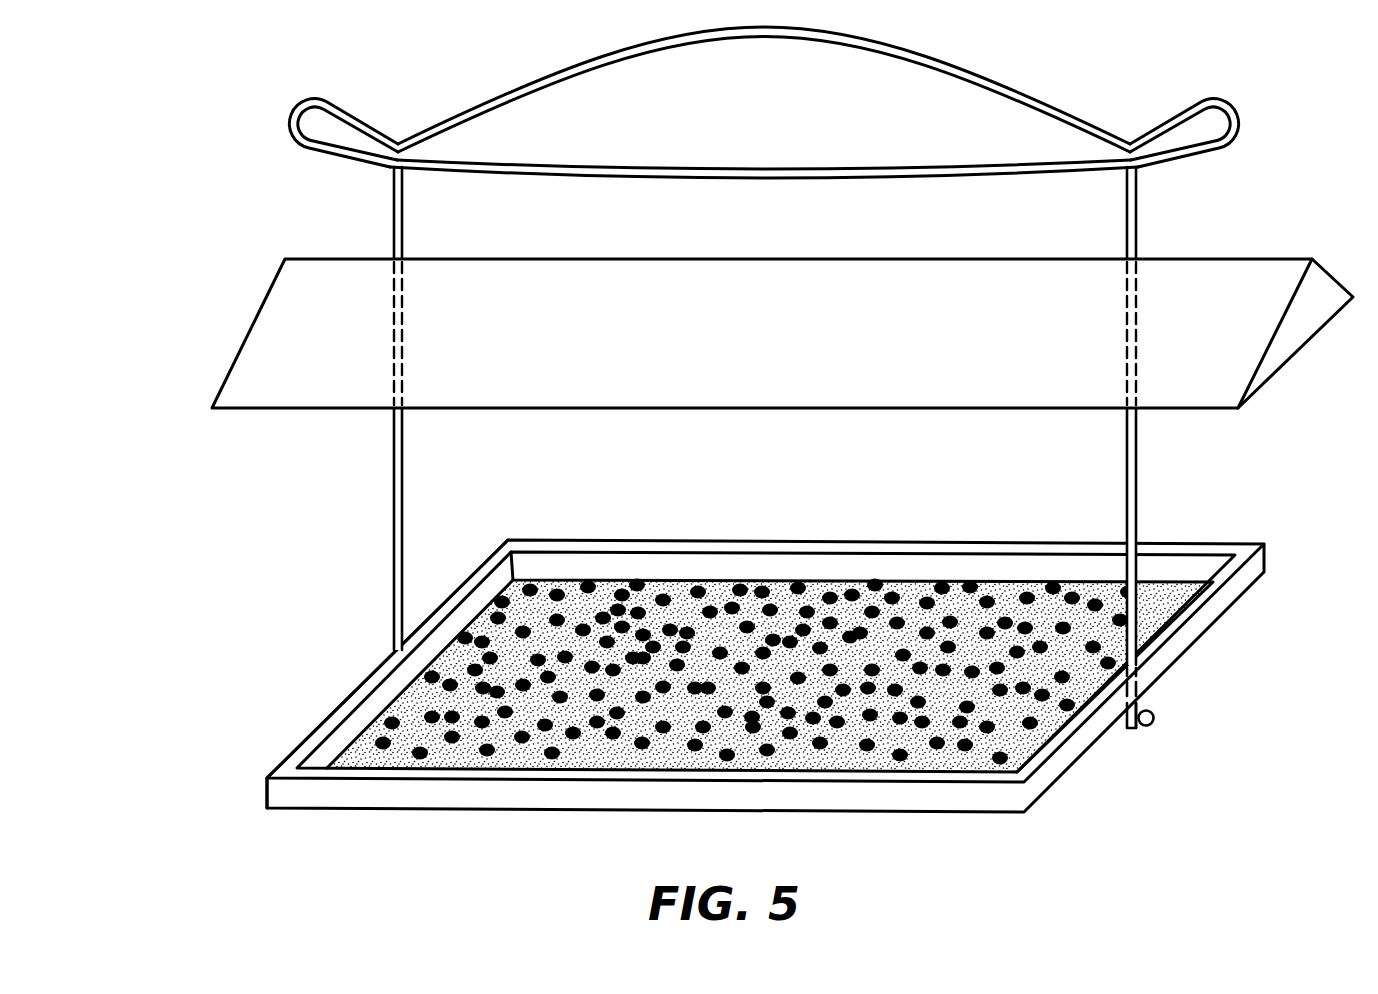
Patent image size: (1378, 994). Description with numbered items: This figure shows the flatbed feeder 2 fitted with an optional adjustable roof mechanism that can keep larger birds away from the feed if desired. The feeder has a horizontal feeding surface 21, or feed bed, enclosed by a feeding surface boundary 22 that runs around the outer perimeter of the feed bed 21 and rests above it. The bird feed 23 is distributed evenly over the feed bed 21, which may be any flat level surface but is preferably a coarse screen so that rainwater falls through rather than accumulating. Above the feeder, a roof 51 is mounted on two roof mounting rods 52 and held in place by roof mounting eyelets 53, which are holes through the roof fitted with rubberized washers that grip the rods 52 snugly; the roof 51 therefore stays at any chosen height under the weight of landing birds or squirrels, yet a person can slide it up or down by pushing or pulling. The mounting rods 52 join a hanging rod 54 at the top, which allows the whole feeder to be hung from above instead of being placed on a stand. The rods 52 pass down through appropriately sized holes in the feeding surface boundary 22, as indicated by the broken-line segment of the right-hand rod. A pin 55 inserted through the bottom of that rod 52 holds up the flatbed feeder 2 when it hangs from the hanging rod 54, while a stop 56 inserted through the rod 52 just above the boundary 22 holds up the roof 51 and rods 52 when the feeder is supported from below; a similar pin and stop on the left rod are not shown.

The flatbed feeder 2 is at (286, 685).
The feeding surface 21 is at (686, 605).
The feeding surface boundary 22 is at (1257, 566).
The bird feed 23 is at (603, 612).
The roof 51 is at (280, 316).
The roof mounting rods 52 is at (394, 457).
The roof mounting eyelets 53 is at (393, 258).
The hanging rod 54 is at (535, 90).
The pin 55 is at (1156, 718).
The stop 56 is at (1147, 612).